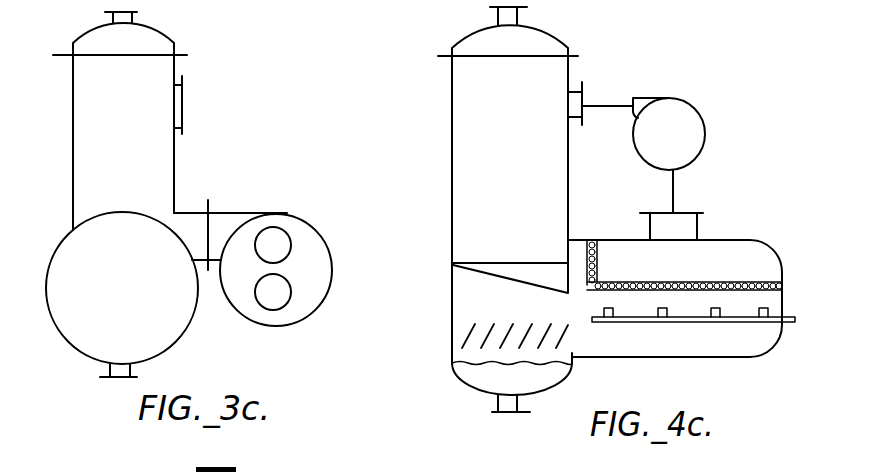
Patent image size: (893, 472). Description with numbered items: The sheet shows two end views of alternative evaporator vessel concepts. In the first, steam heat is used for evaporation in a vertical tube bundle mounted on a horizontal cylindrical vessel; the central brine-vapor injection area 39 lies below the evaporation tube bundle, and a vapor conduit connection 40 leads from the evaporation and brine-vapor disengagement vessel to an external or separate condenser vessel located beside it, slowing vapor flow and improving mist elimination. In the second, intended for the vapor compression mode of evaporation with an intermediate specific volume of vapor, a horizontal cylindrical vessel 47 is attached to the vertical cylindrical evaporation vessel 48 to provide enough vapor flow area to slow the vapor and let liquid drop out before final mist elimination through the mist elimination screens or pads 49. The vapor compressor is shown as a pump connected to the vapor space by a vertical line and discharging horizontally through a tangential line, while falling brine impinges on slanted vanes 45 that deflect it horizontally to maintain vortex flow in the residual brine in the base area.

In FIG. 3c, the central brine-vapor injection area 39 is at (131, 305).
In FIG. 3c, the vapor conduit connection 40 is at (200, 232).
In FIG. 4c, the vertical cylindrical evaporation vessel 48 is at (530, 168).
In FIG. 4c, the mist elimination screens or pads 49 is at (598, 265).
In FIG. 4c, the horizontal cylindrical vessel 47 is at (649, 327).
In FIG. 4c, the slanted vanes 45 is at (555, 349).